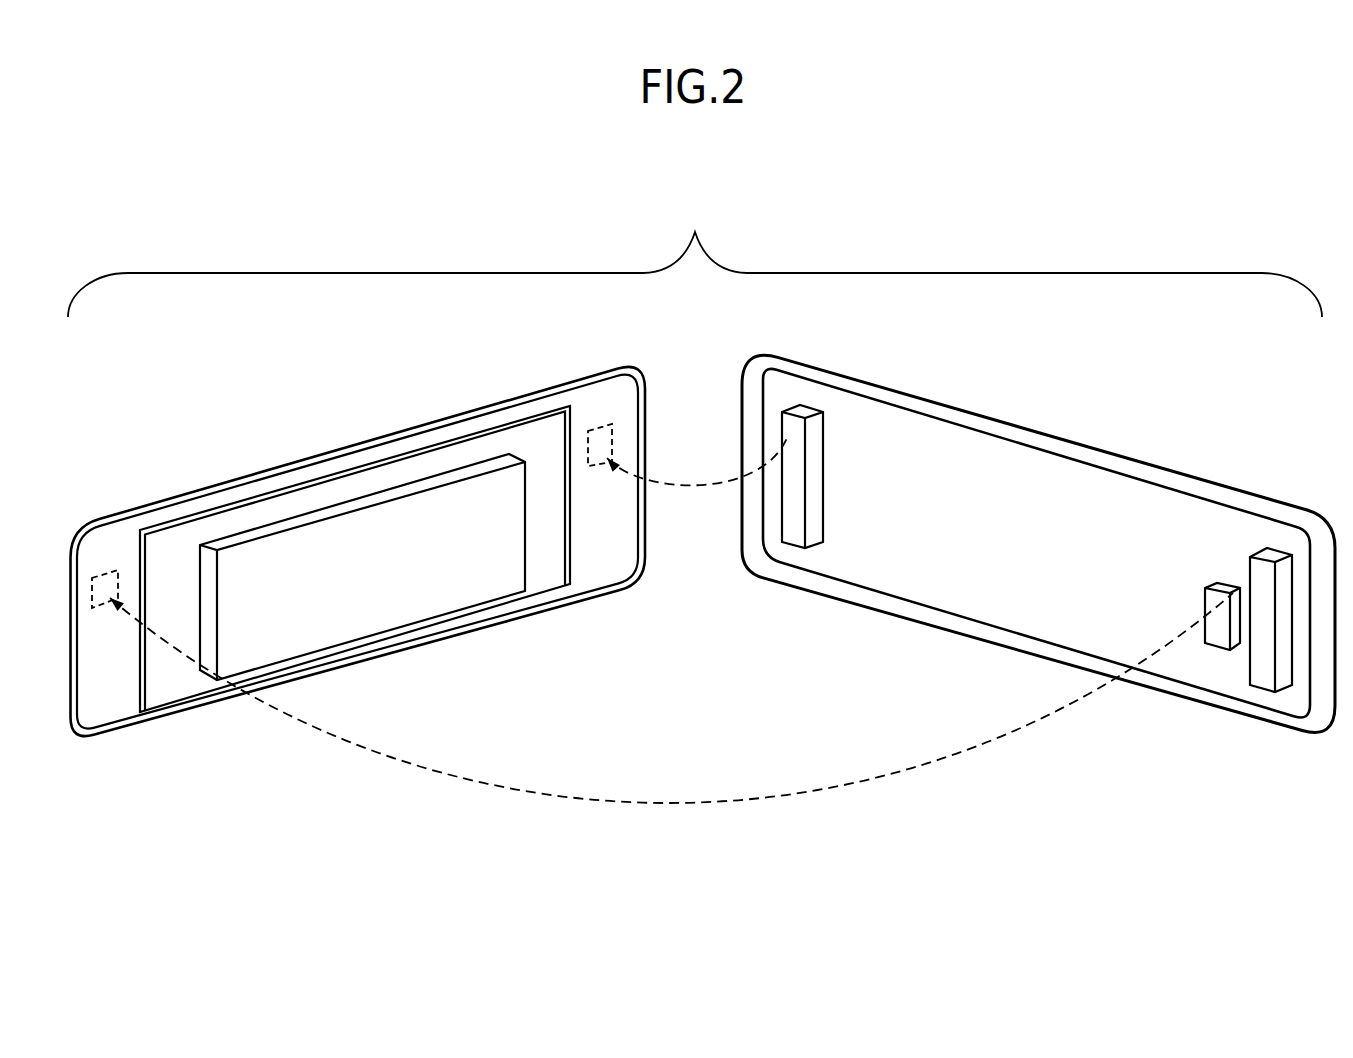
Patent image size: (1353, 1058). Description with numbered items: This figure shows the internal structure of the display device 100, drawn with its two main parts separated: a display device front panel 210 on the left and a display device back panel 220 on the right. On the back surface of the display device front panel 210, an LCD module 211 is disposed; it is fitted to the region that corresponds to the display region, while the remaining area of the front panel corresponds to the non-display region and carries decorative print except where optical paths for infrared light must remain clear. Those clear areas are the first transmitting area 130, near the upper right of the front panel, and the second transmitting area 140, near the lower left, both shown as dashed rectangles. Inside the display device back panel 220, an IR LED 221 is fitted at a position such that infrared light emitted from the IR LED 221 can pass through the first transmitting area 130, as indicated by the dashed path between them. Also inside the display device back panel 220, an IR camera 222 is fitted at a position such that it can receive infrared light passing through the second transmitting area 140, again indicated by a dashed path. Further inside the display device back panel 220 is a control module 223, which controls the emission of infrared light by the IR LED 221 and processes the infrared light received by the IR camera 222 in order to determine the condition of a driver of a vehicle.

The display device 100 is at (695, 261).
The first transmitting area 130 is at (596, 426).
The second transmitting area 140 is at (105, 570).
The display device front panel 210 is at (427, 422).
The LCD module 211 is at (293, 490).
The display device back panel 220 is at (1027, 422).
The IR LED 221 is at (808, 405).
The IR camera 222 is at (1270, 552).
The control module 223 is at (1213, 583).